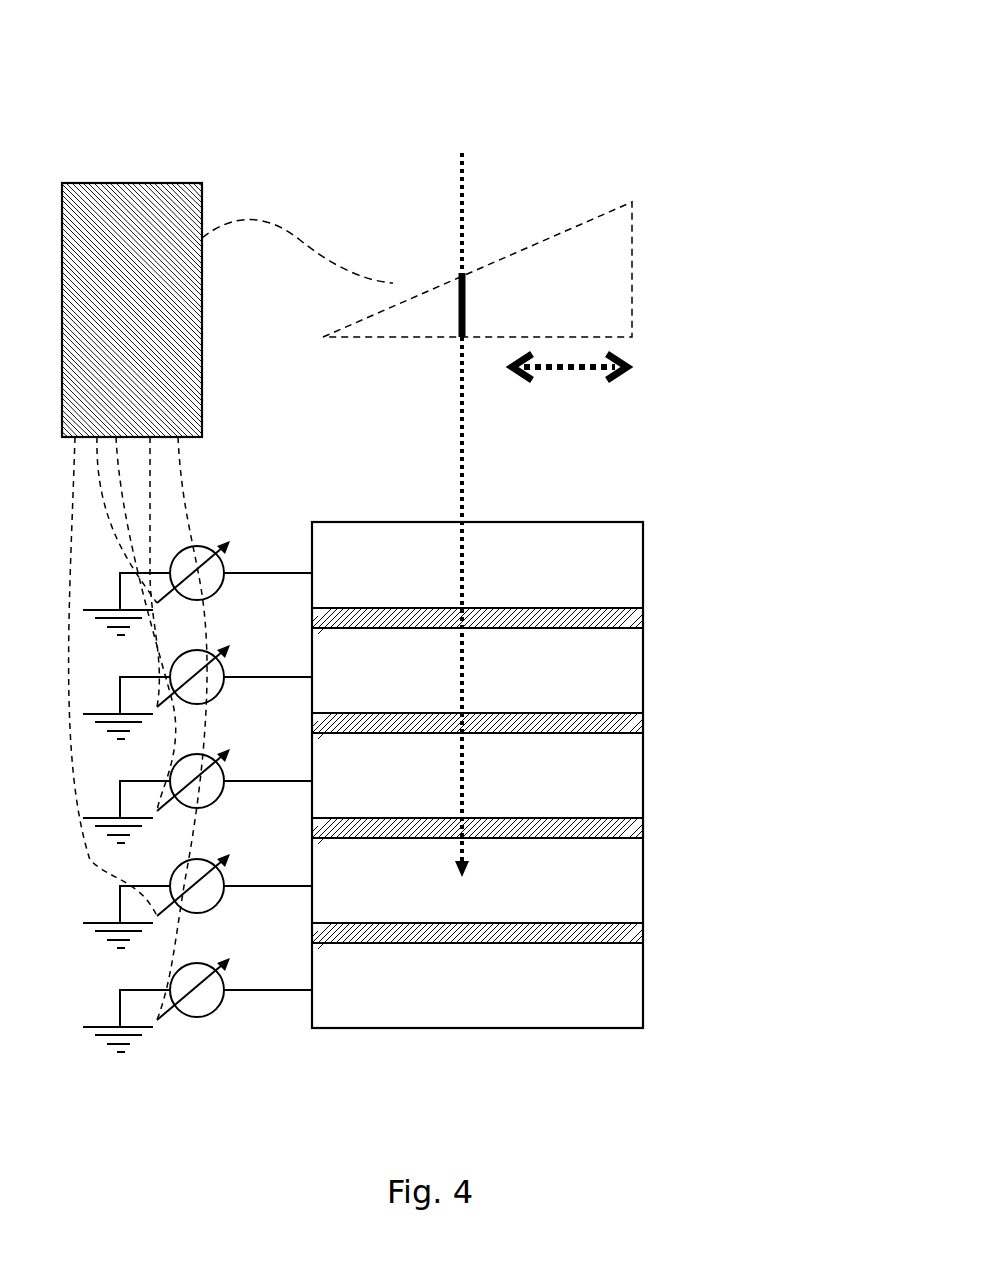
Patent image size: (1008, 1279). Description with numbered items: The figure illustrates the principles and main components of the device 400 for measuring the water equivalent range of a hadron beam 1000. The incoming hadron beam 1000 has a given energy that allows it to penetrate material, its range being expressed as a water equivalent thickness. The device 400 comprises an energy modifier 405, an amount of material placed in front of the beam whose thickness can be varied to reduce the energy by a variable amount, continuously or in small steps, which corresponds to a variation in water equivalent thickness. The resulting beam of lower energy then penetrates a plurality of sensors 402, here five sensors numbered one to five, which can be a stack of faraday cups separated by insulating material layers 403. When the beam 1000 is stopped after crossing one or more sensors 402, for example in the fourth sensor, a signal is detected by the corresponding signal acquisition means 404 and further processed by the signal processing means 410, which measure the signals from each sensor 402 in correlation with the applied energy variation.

The device 400 is at (568, 90).
The signal processing means 410 is at (127, 188).
The hadron beam 1000 is at (467, 228).
The energy modifier 405 is at (627, 255).
The sensors 402 is at (490, 990).
The insulating material layers 403 is at (643, 928).
The signal acquisition means 404 is at (195, 1037).